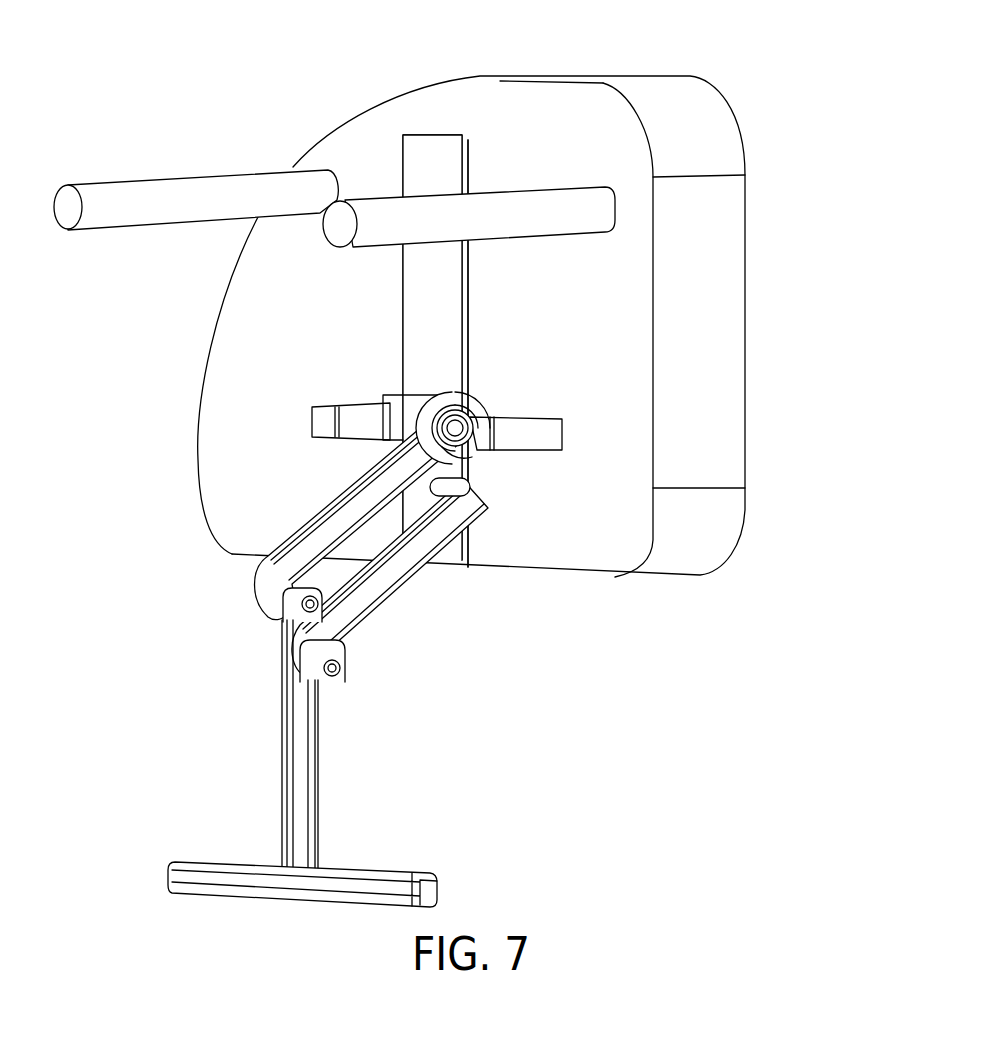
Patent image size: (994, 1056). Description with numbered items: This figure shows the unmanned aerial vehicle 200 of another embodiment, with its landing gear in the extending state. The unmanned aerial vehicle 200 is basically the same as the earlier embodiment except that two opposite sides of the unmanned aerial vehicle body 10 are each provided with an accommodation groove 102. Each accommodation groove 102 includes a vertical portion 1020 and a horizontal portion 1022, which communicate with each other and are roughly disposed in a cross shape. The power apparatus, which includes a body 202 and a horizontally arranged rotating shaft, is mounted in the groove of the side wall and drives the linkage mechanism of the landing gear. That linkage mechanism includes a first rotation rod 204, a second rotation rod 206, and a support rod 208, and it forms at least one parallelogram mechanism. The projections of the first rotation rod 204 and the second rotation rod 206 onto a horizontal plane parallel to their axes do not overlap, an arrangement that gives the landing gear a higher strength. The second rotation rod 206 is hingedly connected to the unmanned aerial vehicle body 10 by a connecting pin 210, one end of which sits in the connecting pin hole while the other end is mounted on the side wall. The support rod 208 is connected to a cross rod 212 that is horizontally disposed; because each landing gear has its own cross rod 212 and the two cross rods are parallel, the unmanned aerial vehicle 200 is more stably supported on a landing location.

The unmanned aerial vehicle 200 is at (474, 462).
The unmanned aerial vehicle body 10 is at (706, 112).
The accommodation groove 102 is at (433, 406).
The vertical portion 1020 is at (430, 348).
The horizontal portion 1022 is at (412, 408).
The body 202 is at (408, 395).
The first rotation rod 204 is at (472, 408).
The connecting pin 210 is at (475, 430).
The second rotation rod 206 is at (458, 522).
The support rod 208 is at (348, 682).
The cross rod 212 is at (360, 863).